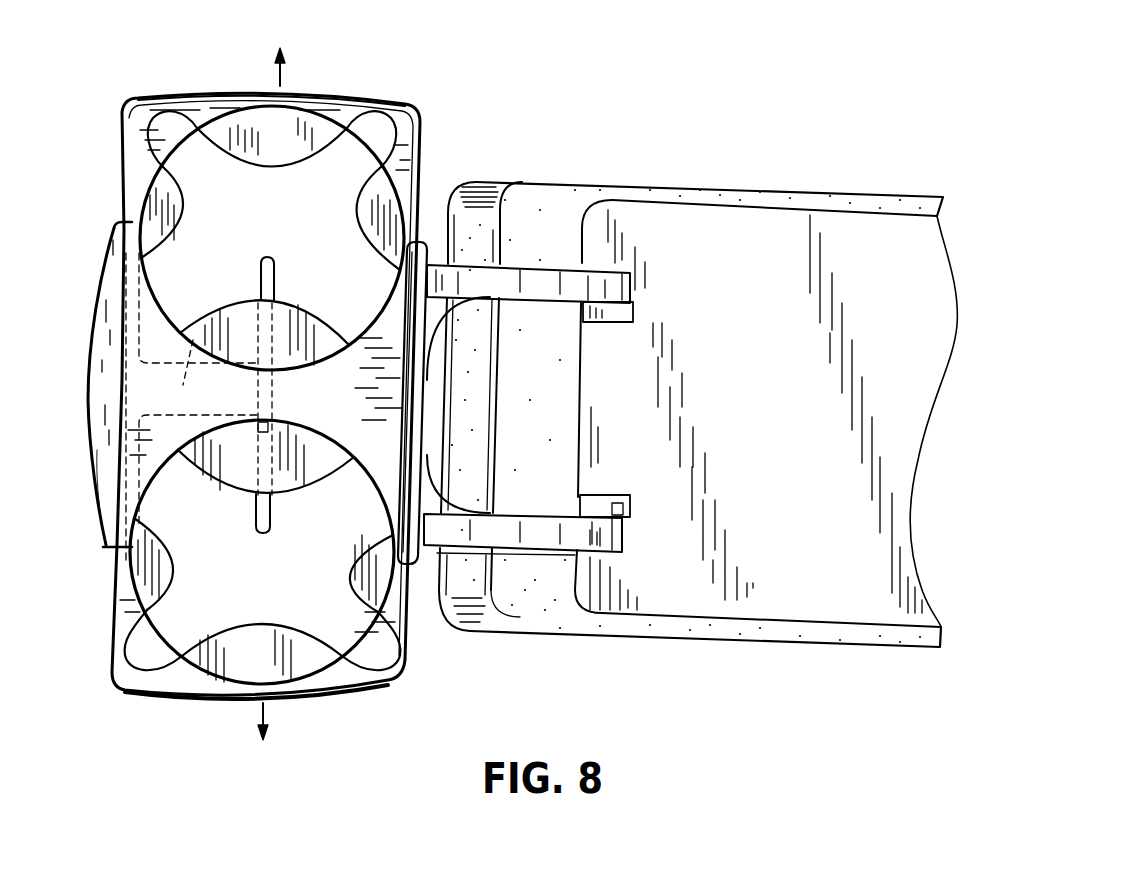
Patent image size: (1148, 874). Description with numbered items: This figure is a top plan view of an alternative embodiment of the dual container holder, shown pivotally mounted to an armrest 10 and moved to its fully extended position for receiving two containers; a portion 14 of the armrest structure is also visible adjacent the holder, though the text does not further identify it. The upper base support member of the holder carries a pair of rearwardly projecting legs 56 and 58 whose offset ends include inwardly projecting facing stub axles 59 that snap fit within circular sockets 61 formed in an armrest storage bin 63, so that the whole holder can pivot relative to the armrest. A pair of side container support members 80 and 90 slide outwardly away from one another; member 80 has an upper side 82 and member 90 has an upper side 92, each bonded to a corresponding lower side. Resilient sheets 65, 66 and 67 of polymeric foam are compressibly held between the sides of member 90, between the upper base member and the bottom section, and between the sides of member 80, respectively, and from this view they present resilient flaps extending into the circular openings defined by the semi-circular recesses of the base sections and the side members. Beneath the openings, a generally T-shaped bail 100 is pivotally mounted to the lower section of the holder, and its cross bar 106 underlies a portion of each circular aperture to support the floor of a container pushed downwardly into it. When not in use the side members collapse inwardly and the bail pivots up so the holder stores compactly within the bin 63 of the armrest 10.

The armrest 10 is at (603, 164).
The top wall of frame 14 is at (686, 208).
The rearwardly projecting leg 56 is at (547, 541).
The rearwardly projecting leg 58 is at (550, 277).
The stub axle 59 is at (634, 311).
The circular socket 61 is at (604, 318).
The armrest storage bin 63 is at (818, 610).
The resilient sheet 65 is at (176, 192).
The resilient sheet 66 is at (324, 334).
The resilient sheet 67 is at (170, 604).
The side container support member 80 is at (407, 629).
The upper side 82 is at (256, 712).
The side container support member 90 is at (438, 173).
The upper side 92 is at (338, 102).
The bail 100 is at (193, 336).
The cross bar 106 is at (272, 290).